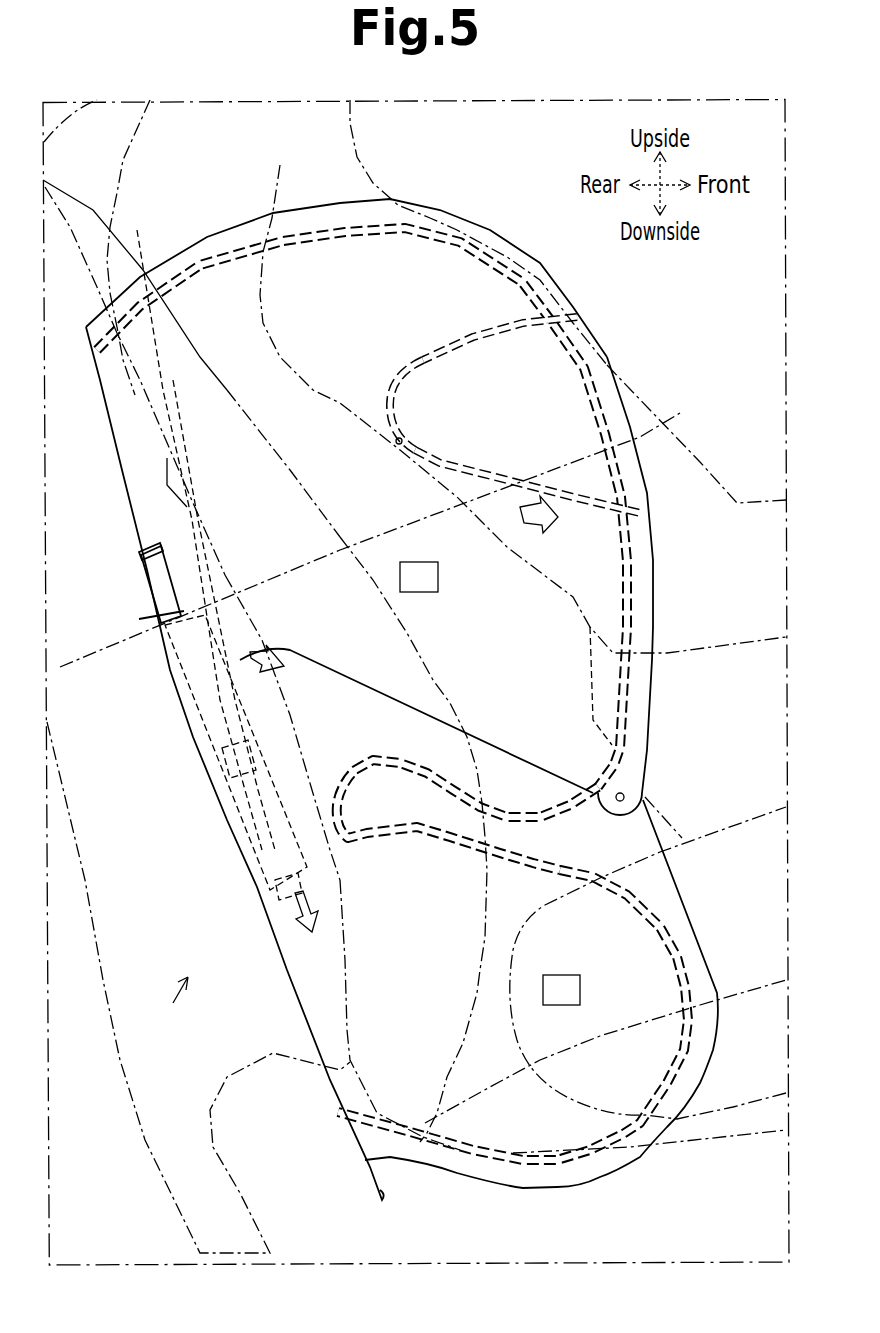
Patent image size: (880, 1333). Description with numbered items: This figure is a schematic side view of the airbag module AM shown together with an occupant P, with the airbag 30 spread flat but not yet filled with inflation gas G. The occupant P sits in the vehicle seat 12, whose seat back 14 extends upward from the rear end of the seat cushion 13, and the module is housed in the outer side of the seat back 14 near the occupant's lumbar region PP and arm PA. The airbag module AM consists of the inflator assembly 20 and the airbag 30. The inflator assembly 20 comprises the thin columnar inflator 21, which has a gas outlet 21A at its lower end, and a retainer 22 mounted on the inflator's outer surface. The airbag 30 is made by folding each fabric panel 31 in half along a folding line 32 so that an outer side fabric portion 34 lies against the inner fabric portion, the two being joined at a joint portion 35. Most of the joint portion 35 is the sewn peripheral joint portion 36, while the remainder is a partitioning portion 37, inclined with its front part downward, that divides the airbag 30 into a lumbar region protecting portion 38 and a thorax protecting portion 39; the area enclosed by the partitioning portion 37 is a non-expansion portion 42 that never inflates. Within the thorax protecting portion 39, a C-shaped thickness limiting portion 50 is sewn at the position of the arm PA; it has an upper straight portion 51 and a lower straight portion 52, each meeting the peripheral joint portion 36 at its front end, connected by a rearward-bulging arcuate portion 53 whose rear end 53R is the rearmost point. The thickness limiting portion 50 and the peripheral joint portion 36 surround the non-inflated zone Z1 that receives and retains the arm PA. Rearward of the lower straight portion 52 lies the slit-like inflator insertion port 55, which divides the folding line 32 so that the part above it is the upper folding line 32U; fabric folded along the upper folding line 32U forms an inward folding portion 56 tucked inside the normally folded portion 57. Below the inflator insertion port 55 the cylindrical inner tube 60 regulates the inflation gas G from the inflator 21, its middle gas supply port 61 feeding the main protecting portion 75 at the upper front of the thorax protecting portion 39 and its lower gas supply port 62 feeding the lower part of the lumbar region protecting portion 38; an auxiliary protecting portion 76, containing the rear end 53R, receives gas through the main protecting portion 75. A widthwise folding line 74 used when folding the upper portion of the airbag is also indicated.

The vehicle seat 12 is at (130, 141).
The seat cushion 13 is at (735, 993).
The seat back 14 is at (93, 207).
The inflator assembly 20 is at (114, 579).
The inflator 21 is at (140, 553).
The gas outlet 21A is at (213, 780).
The retainer 22 is at (96, 538).
The airbag 30 is at (712, 588).
The fabric panel 31 is at (623, 733).
The folding line 32 is at (148, 595).
The upper folding line 32U is at (173, 417).
The outer side fabric portion 34 is at (553, 287).
The joint portion 35 is at (392, 674).
The peripheral joint portion 36 is at (205, 262).
The partitioning portion 37 is at (465, 808).
The lumbar region protecting portion 38 is at (648, 963).
The thorax protecting portion 39 is at (419, 577).
The non-expansion portion 42 is at (540, 856).
The thickness limiting portion 50 is at (487, 430).
The upper straight portion 51 is at (517, 325).
The lower straight portion 52 is at (587, 507).
The arcuate portion 53 is at (392, 395).
The rear end 53R is at (396, 444).
The inflator insertion port 55 is at (140, 620).
The inward folding portion 56 is at (127, 420).
The normally folded portion 57 is at (305, 1012).
The inner tube 60 is at (238, 857).
The gas supply port 61 is at (268, 706).
The gas supply port 62 is at (272, 898).
The folding line 74 is at (682, 414).
The main protecting portion 75 is at (517, 664).
The auxiliary protecting portion 76 is at (313, 428).
The occupant P is at (358, 152).
The arm PA is at (640, 390).
The lumbar region PP is at (477, 978).
The non-inflated zone Z1 is at (503, 426).
The inflation gas G is at (275, 655).
The airbag module AM is at (175, 1007).